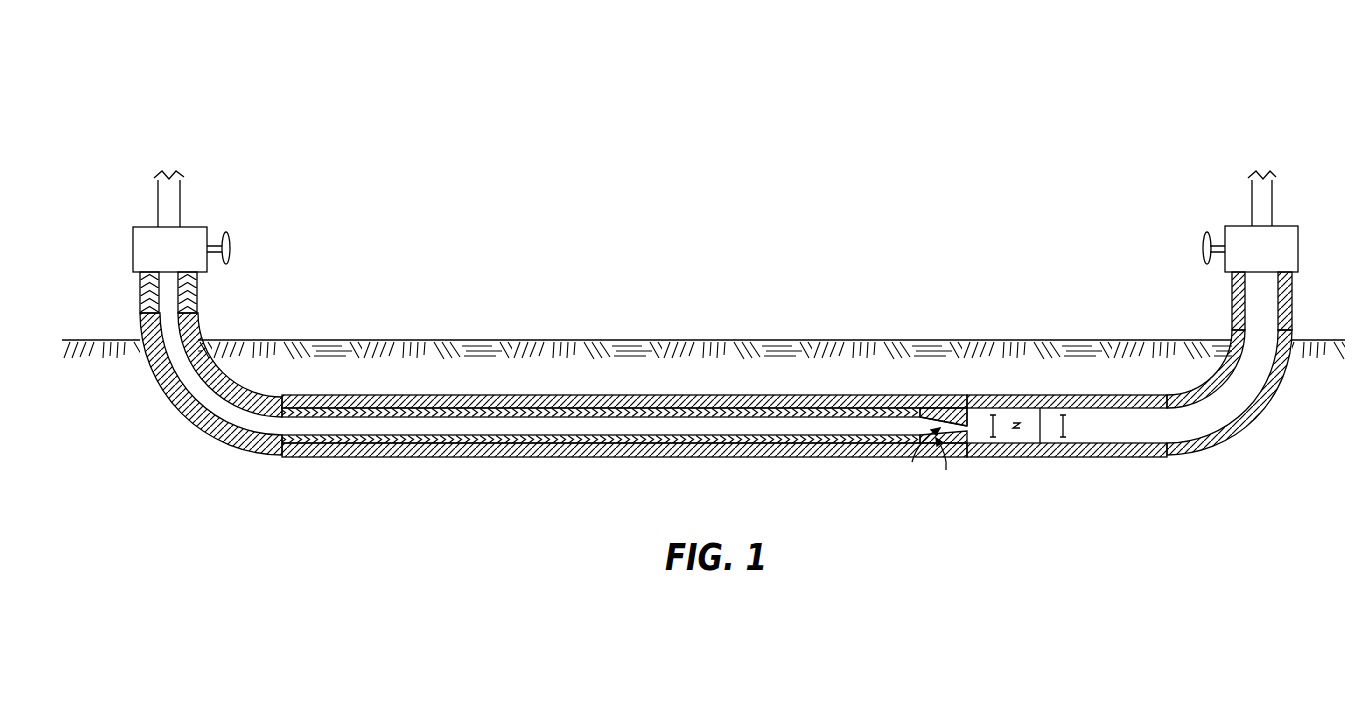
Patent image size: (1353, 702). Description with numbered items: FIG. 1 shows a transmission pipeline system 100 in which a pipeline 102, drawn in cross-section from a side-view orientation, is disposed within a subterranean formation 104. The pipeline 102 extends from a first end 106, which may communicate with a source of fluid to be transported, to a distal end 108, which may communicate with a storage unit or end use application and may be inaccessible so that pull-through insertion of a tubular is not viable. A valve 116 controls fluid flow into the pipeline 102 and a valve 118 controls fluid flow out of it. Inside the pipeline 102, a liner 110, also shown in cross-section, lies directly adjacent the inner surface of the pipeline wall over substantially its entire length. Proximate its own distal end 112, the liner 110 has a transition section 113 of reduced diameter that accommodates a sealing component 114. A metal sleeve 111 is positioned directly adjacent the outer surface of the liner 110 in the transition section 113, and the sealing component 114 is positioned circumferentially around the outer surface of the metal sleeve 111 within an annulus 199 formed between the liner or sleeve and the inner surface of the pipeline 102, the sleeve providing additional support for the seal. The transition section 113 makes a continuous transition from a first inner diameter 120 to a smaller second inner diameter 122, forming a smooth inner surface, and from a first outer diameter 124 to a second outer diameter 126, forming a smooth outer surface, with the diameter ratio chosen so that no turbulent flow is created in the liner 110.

The pipeline system 100 is at (193, 76).
The pipeline 102 is at (771, 456).
The subterranean formation 104 is at (1187, 520).
The first end 106 is at (192, 216).
The distal end 108 is at (1240, 215).
The liner 110 is at (562, 444).
The metal sleeve 111 is at (963, 417).
The distal end 112 is at (964, 428).
The transition section 113 is at (912, 462).
The sealing component 114 is at (953, 411).
The valve 116 is at (133, 237).
The valve 118 is at (1298, 237).
The first inner diameter 120 is at (997, 414).
The second inner diameter 122 is at (1018, 423).
The first outer diameter 124 is at (1044, 410).
The second outer diameter 126 is at (1066, 428).
The annulus 199 is at (946, 470).